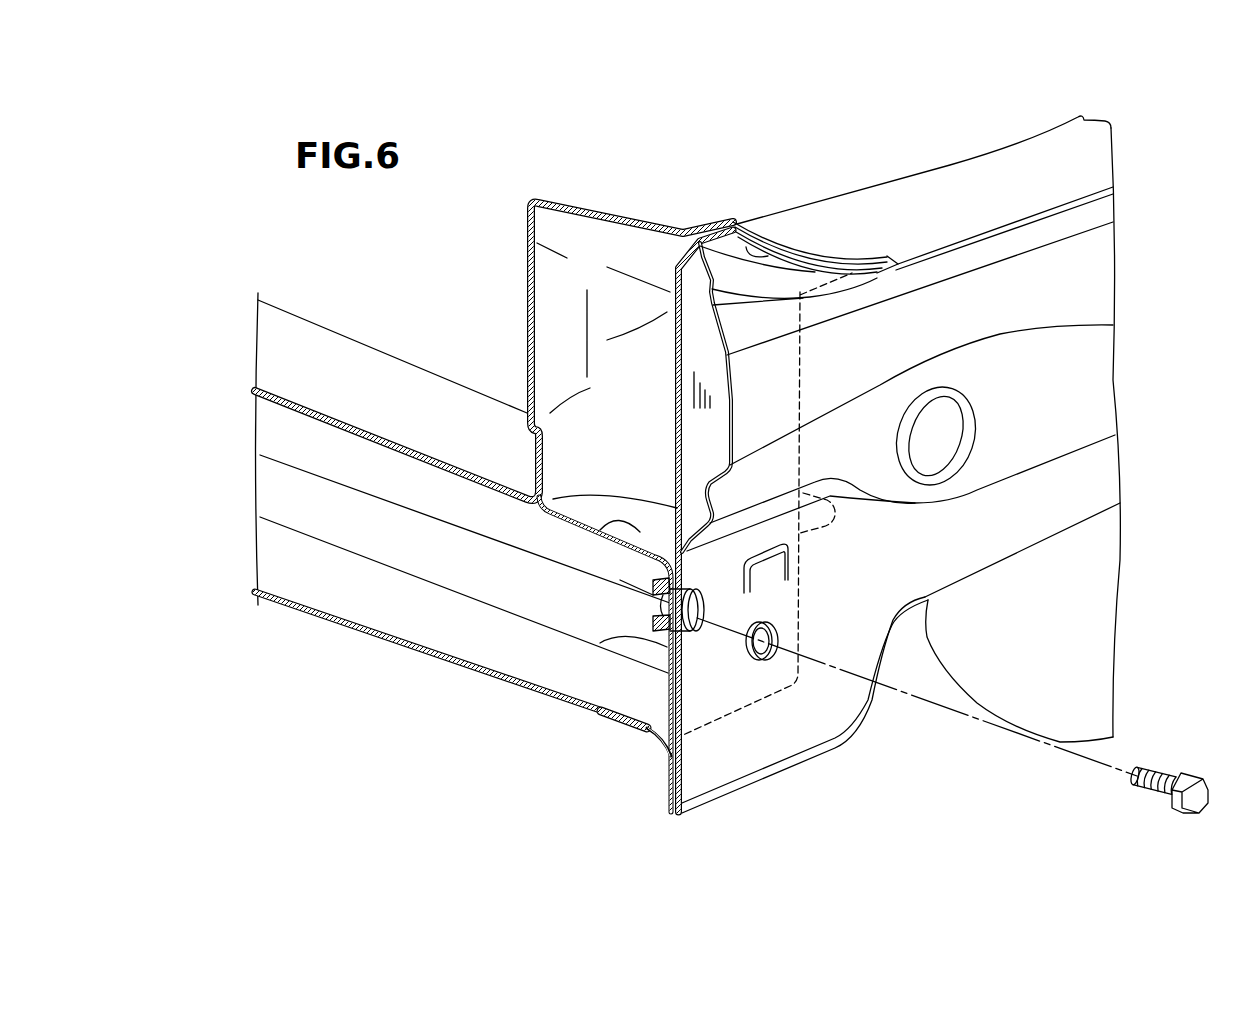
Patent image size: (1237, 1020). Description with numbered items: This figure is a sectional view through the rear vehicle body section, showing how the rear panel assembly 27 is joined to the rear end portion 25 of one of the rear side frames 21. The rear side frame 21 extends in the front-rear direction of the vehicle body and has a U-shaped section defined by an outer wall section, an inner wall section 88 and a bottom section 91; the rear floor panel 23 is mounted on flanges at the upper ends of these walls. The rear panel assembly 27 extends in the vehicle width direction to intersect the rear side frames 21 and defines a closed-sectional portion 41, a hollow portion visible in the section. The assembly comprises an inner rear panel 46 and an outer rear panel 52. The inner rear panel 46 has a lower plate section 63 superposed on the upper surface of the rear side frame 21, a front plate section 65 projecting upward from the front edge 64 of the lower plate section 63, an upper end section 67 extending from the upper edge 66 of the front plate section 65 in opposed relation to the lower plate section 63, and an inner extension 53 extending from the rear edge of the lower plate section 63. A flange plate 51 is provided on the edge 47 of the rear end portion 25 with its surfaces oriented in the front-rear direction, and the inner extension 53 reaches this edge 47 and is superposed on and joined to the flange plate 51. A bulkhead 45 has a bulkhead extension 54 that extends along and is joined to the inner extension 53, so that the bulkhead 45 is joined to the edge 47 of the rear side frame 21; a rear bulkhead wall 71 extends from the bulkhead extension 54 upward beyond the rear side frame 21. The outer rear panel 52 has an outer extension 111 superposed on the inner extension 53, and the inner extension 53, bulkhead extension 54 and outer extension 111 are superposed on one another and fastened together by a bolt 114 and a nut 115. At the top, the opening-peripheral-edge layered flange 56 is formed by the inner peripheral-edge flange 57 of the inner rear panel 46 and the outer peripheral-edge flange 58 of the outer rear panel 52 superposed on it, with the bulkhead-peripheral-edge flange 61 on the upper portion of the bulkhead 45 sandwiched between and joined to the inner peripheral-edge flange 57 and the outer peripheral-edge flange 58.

The rear side frame 21 is at (240, 347).
The rear floor panel 23 is at (377, 375).
The rear end portion 25 is at (565, 668).
The rear panel assembly 27 is at (875, 178).
The closed-sectional portion 41 is at (605, 518).
The bulkhead 45 is at (657, 362).
The inner rear panel 46 is at (528, 268).
The edge 47 is at (647, 732).
The flange plate 51 is at (668, 780).
The outer rear panel 52 is at (1067, 367).
The inner extension 53 is at (655, 635).
The bulkhead extension 54 is at (710, 722).
The opening-peripheral-edge layered flange 56 is at (760, 232).
The inner peripheral-edge flange 57 is at (795, 247).
The outer peripheral-edge flange 58 is at (780, 240).
The bulkhead-peripheral-edge flange 61 is at (720, 220).
The lower plate section 63 is at (600, 585).
The front edge 64 is at (640, 458).
The front plate section 65 is at (551, 345).
The upper edge 66 is at (597, 287).
The upper end section 67 is at (657, 253).
The rear bulkhead wall 71 is at (710, 433).
The inner wall section 88 is at (279, 433).
The bottom section 91 is at (279, 553).
The outer extension 111 is at (727, 662).
The bolt 114 is at (1190, 770).
The nut 115 is at (653, 620).